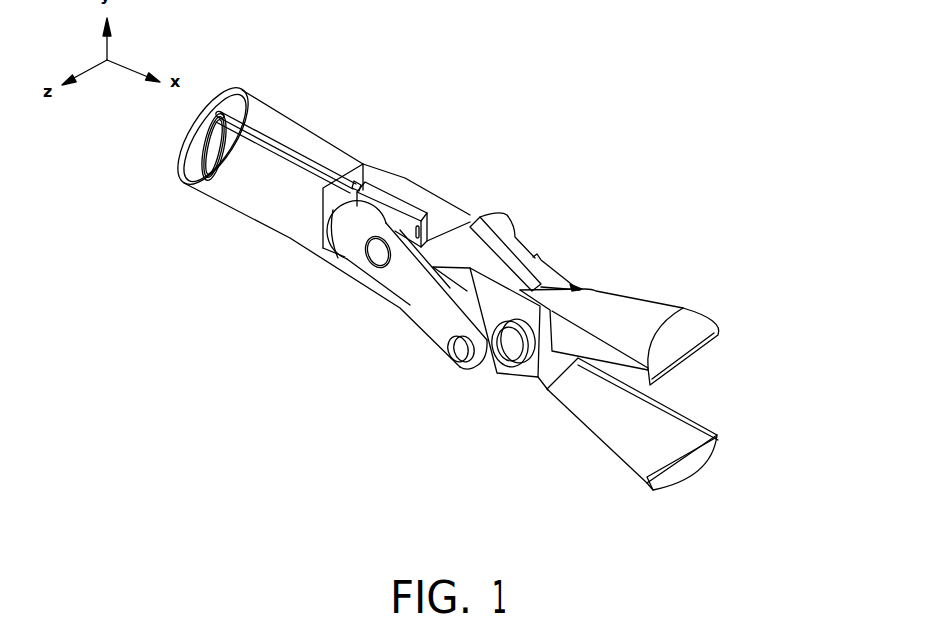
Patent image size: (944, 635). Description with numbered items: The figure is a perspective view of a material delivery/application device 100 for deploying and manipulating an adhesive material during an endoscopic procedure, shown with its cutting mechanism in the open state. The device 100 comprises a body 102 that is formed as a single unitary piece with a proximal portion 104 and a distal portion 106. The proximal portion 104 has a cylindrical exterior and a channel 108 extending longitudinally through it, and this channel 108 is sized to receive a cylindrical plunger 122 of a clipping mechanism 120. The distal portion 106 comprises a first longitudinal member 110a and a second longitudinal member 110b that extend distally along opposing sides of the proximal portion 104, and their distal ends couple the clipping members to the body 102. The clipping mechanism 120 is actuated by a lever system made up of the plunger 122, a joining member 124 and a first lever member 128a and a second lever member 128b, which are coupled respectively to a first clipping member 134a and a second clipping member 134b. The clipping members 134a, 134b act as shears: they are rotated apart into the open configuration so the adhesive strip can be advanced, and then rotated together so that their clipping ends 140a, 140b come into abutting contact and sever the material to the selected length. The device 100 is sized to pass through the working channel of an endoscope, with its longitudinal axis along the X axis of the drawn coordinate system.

The material delivery/application device 100 is at (757, 77).
The body 102 is at (432, 80).
The proximal portion 104 is at (343, 74).
The distal portion 106 is at (516, 132).
The channel 108 is at (235, 152).
The first longitudinal member 110a is at (402, 192).
The second longitudinal member 110b is at (348, 252).
The clipping mechanism 120 is at (632, 200).
The plunger 122 is at (292, 183).
The joining member 124 is at (400, 210).
The first lever member 128a is at (447, 220).
The second lever member 128b is at (427, 308).
The first clipping member 134a is at (593, 410).
The second clipping member 134b is at (627, 320).
The clipping end of first clipping member 140a is at (683, 457).
The clipping end of second clipping member 140b is at (685, 358).